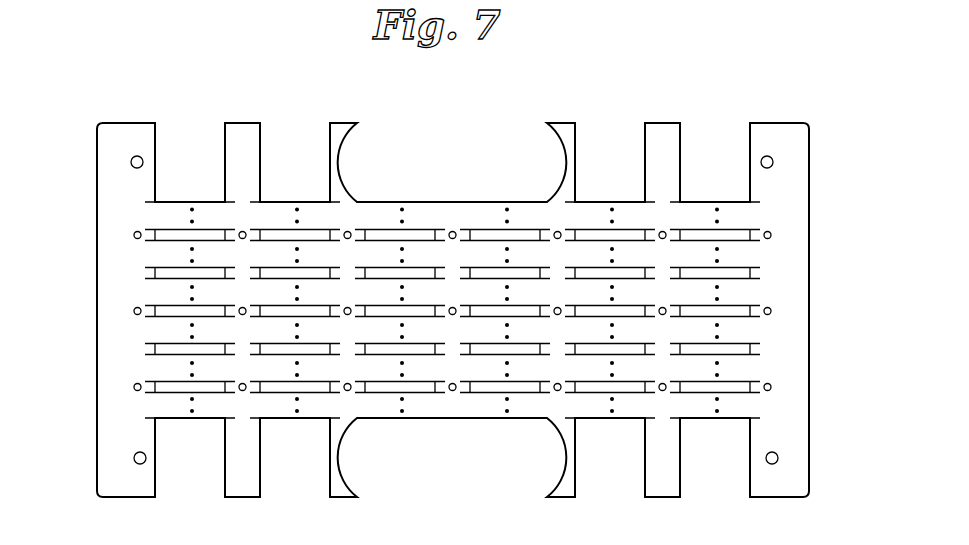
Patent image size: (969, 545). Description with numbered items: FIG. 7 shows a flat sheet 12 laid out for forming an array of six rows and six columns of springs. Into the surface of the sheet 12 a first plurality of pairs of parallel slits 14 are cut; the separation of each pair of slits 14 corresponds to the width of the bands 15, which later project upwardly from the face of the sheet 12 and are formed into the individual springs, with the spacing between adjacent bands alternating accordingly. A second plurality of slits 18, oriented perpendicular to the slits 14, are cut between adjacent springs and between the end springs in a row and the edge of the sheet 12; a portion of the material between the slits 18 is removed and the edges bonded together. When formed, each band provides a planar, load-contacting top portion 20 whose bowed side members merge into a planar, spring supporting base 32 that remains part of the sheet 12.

The sheet 12 is at (112, 309).
The parallel slits 14 is at (197, 393).
The bands 15 is at (175, 410).
The second slits 18 is at (222, 145).
The top portion 20 is at (208, 211).
The spring supporting base 32 is at (138, 265).